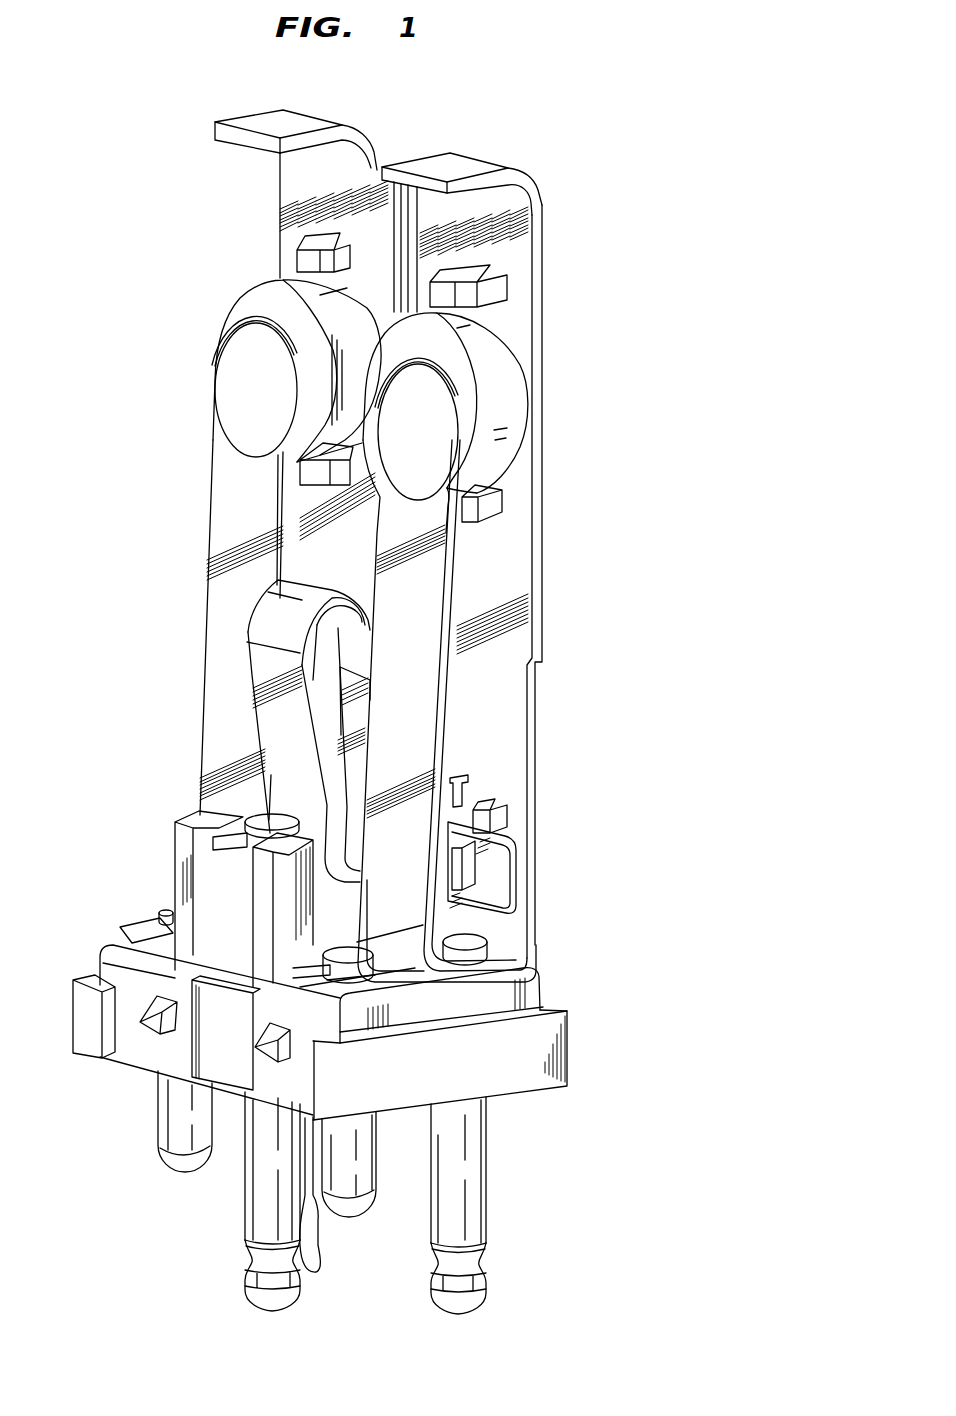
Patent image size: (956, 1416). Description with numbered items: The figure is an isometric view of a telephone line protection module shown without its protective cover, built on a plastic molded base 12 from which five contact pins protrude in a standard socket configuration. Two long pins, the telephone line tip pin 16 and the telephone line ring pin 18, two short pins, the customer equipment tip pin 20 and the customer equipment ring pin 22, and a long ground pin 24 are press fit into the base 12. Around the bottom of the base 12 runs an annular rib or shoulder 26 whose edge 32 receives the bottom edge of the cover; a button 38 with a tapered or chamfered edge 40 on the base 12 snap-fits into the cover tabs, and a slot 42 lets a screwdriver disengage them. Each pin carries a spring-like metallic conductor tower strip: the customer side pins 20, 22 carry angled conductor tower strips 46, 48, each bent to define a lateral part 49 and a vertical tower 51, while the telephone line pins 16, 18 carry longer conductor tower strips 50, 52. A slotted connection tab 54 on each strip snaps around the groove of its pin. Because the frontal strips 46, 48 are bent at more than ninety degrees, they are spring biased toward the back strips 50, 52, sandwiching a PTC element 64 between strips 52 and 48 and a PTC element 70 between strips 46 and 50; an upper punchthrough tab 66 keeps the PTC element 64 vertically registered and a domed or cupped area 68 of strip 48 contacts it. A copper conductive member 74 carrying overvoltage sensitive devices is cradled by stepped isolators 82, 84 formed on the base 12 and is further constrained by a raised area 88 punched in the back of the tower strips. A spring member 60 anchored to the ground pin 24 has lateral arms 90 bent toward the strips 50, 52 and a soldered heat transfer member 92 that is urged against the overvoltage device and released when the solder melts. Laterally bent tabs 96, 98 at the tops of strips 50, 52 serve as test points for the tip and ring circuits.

The plastic molded base 12 is at (522, 1105).
The telephone line tip pin 16 is at (322, 1240).
The telephone line ring pin 18 is at (487, 1197).
The customer equipment tip pin 20 is at (160, 1120).
The customer equipment ring pin 22 is at (378, 1173).
The ground pin 24 is at (245, 1222).
The annular rib or shoulder 26 is at (568, 1043).
The edge of annular shoulder 32 is at (547, 1002).
The button 38 is at (153, 1023).
The tapered or chamfered edge 40 is at (270, 1037).
The slot 42 is at (235, 1070).
The conductor tower strip 46 is at (213, 645).
The conductor tower strip 48 is at (463, 583).
The lateral part 49 is at (420, 980).
The conductor tower strip 50 is at (287, 187).
The vertical tower 51 is at (428, 683).
The conductor tower strip 52 is at (515, 252).
The slotted connection tab 54 is at (143, 924).
The spring member 60 is at (270, 726).
The positive temperature coefficient (PTC) element 64 is at (500, 370).
The upper punchthrough tab 66 is at (465, 291).
The domed or cupped area 68 is at (427, 470).
The PTC element 70 is at (258, 301).
The copper conductive member 74 is at (497, 870).
The stepped isolator 82 is at (183, 842).
The stepped isolator 84 is at (260, 878).
The raised area 88 is at (490, 805).
The lateral arm 90 is at (470, 786).
The heat transfer member 92 is at (353, 760).
The laterally bent tab / test point 96 is at (300, 123).
The laterally bent tab / test point 98 is at (467, 163).